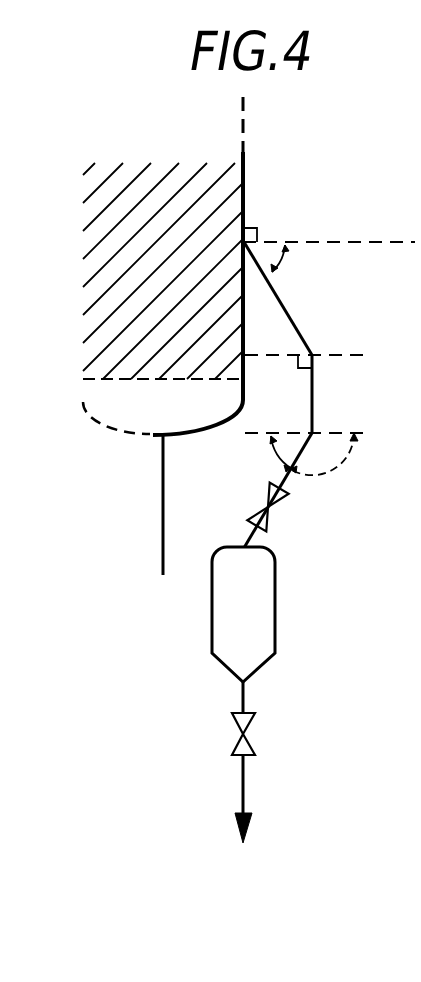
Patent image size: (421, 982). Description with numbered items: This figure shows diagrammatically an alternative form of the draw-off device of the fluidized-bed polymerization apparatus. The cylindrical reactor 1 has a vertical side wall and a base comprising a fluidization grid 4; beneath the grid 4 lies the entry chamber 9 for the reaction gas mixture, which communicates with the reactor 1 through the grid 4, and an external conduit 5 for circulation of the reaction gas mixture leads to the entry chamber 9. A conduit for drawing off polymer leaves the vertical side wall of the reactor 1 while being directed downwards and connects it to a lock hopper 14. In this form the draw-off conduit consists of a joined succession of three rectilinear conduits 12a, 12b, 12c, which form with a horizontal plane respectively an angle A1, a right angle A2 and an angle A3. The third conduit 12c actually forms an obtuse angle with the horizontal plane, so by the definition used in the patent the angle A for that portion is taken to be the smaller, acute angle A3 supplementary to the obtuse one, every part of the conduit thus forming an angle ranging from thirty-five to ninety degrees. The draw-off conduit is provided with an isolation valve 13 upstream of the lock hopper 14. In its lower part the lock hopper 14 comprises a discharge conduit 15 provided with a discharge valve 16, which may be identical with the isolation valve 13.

The cylindrical reactor 1 is at (245, 195).
The fluidization grid 4 is at (92, 380).
The entry chamber 9 is at (117, 437).
The external conduit 5 is at (162, 530).
The rectilinear conduit 12a is at (291, 318).
The rectilinear conduit 12b is at (313, 393).
The rectilinear conduit 12c is at (288, 482).
The angle A1 is at (281, 266).
The right angle A2 is at (300, 362).
The acute angle A3 is at (272, 455).
The isolation valve 13 is at (267, 508).
The lock hopper 14 is at (276, 617).
The discharge valve 16 is at (245, 733).
The discharge conduit 15 is at (245, 795).